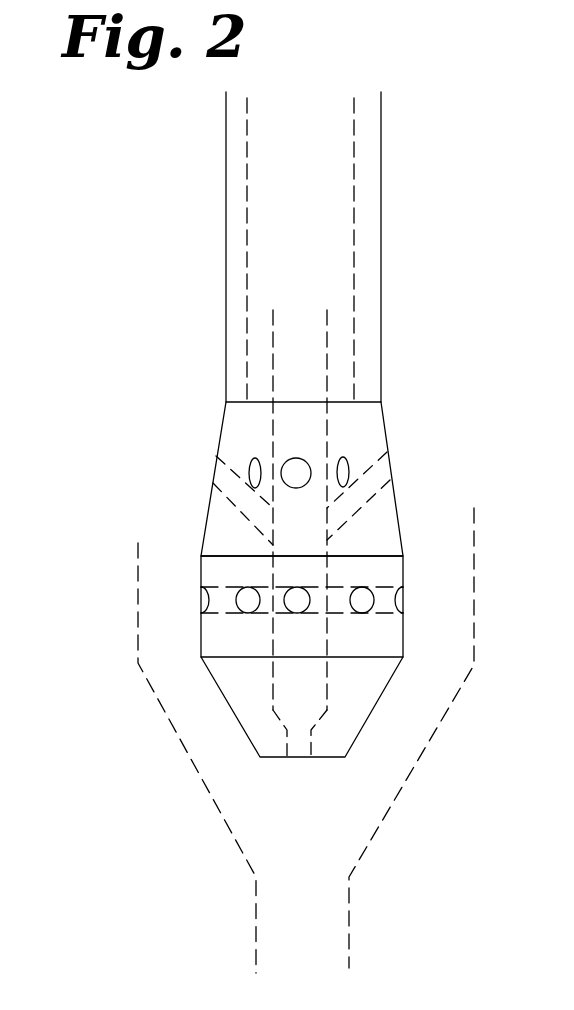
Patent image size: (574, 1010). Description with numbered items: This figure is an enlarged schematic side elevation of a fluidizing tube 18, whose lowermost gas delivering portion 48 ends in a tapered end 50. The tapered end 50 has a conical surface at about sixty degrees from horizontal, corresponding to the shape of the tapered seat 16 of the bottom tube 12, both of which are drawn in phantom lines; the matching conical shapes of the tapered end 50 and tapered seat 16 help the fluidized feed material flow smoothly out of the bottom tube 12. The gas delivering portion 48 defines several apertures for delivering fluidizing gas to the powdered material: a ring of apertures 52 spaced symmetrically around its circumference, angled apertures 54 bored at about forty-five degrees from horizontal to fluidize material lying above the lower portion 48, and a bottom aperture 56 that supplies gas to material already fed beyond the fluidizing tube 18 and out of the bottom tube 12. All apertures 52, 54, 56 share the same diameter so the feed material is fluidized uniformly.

The bottom tube 12 is at (138, 580).
The tapered seat 16 is at (402, 788).
The fluidizing tube 18 is at (143, 260).
The gas delivering portion 48 is at (252, 554).
The tapered end 50 is at (242, 731).
The apertures 52 is at (236, 612).
The angled apertures 54 is at (247, 467).
The bottom aperture 56 is at (299, 758).